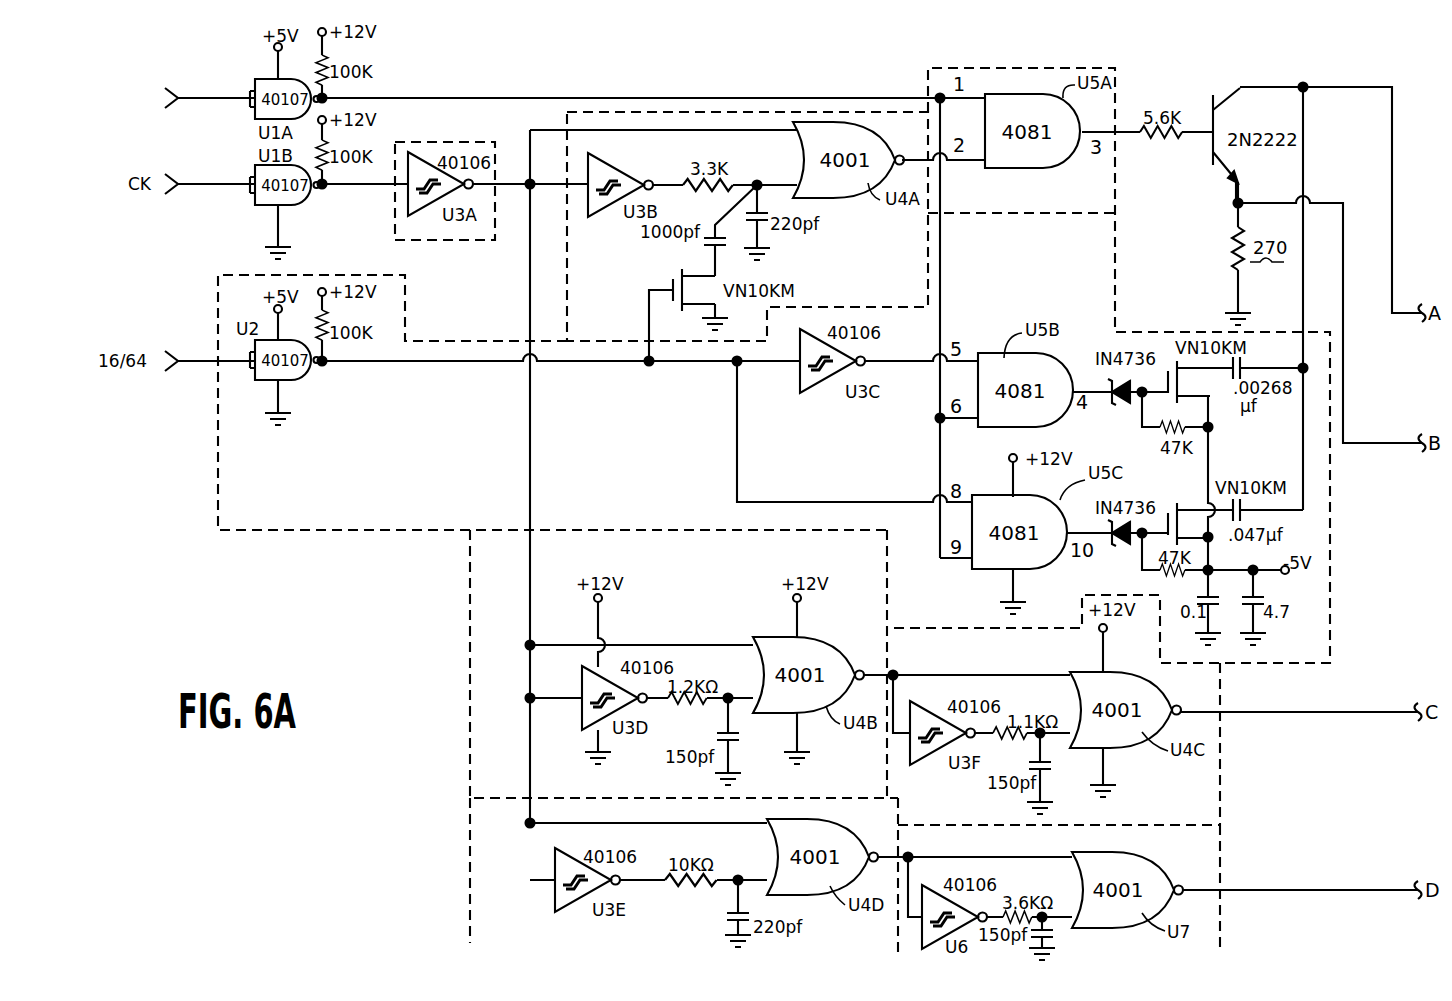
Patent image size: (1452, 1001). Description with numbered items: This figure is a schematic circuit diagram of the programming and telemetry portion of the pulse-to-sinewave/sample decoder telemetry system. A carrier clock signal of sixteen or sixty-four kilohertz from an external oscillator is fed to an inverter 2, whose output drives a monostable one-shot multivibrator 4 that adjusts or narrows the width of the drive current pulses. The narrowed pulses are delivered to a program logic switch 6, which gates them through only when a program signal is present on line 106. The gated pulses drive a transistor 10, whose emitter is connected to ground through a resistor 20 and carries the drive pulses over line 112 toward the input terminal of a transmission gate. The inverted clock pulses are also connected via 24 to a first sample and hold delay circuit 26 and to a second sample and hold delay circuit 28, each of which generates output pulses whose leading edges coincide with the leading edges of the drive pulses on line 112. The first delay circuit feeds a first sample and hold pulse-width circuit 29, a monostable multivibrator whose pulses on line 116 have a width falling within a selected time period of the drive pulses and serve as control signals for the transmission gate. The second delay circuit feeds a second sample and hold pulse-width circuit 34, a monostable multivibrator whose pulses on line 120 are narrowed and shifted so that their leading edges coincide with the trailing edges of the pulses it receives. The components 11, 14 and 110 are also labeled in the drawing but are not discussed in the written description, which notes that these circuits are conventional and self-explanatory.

The inverter 2 is at (470, 243).
The monostable multivibrator 4 is at (723, 112).
The program logic switch 6 is at (928, 80).
The transistor 10 is at (1222, 166).
The base resistor 5.6K 11 is at (1153, 136).
The field effect transistors VN10KM 14 is at (1222, 384).
The resistor 20 is at (1232, 246).
The line 24 is at (530, 432).
The first sample and hold delay circuit 26 is at (470, 735).
The second sample and hold delay circuit 28 is at (470, 838).
The first sample and hold pulse-width circuit 29 is at (1222, 796).
The second sample and hold pulse-width circuit 34 is at (1222, 869).
The line 106 is at (224, 100).
The output line A 110 is at (1392, 232).
The line 112 is at (1343, 372).
The line 116 is at (1380, 712).
The line 120 is at (1322, 890).